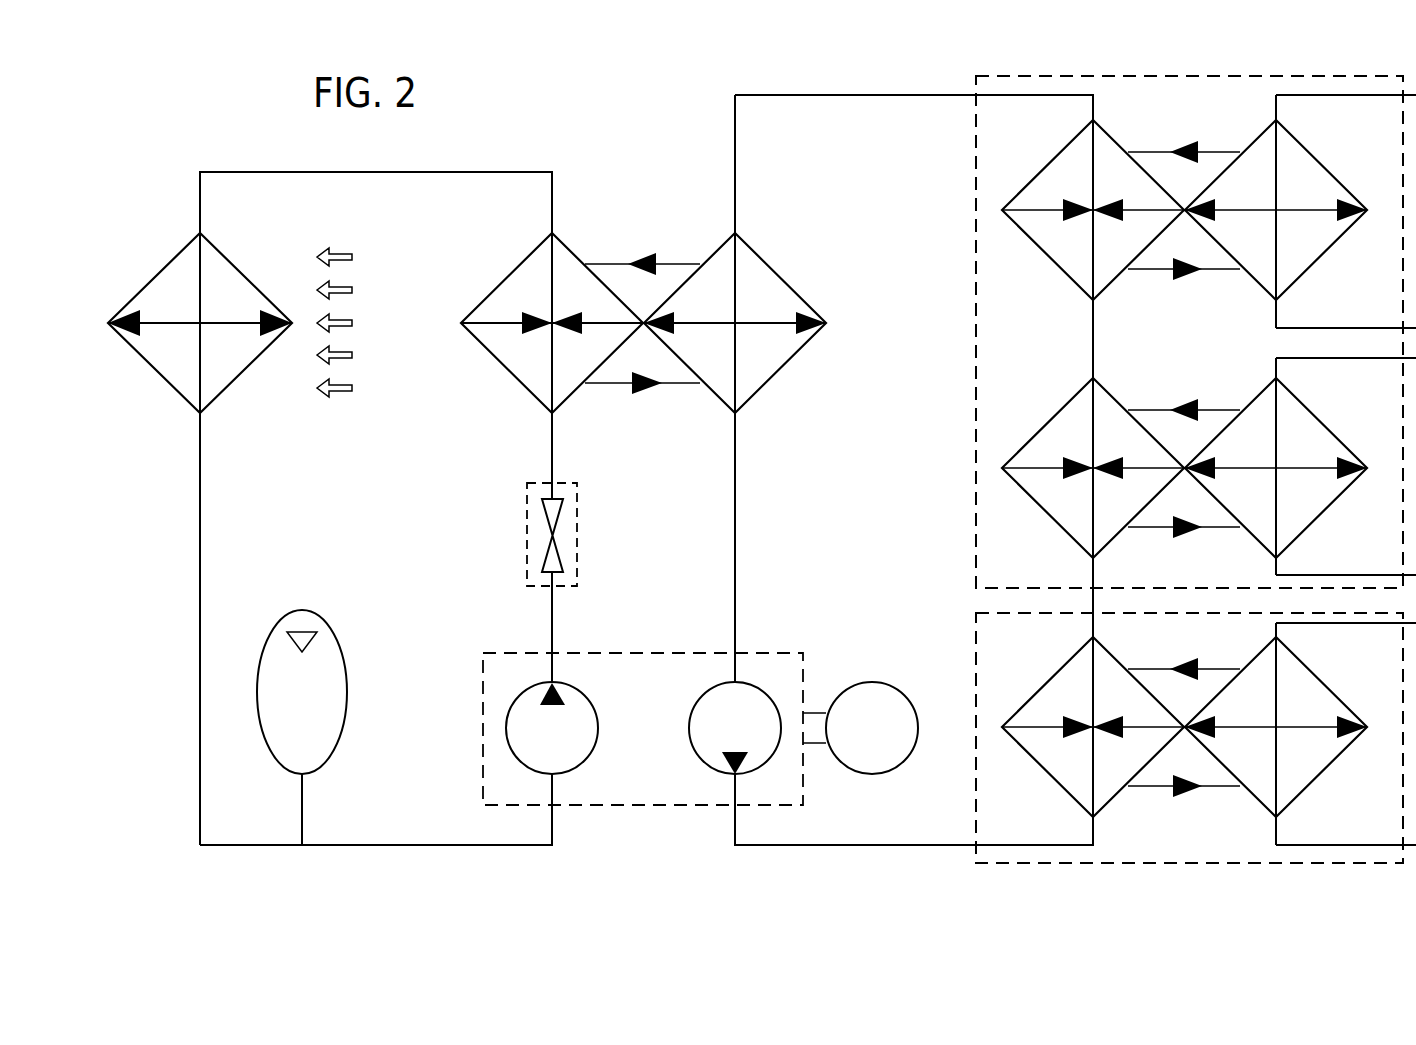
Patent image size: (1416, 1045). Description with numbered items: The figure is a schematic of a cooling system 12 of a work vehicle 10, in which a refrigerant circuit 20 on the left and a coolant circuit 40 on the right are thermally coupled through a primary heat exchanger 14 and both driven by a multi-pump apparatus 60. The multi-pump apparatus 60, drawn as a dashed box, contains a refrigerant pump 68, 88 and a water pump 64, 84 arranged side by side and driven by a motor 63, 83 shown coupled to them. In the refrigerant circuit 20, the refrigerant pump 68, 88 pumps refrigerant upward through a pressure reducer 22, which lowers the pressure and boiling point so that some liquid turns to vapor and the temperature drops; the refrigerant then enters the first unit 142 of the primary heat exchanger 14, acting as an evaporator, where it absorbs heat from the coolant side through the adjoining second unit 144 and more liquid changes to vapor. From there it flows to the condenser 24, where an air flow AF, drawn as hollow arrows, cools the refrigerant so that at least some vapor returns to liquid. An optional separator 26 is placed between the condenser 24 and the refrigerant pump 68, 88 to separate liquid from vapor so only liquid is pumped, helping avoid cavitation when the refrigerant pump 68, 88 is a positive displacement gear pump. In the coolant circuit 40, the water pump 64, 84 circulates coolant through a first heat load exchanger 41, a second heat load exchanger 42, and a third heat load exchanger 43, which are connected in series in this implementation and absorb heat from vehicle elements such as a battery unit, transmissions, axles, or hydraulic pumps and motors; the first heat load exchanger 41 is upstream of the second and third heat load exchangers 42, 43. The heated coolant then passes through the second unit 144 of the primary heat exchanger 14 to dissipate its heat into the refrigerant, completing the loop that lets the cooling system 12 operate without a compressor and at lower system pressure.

The work vehicle 10 is at (762, 472).
The cooling system 12 is at (668, 62).
The primary heat exchanger 14 is at (643, 215).
The first unit (evaporator) of the primary heat exchanger 142 is at (473, 352).
The second unit of the primary heat exchanger 144 is at (815, 353).
The refrigerant circuit 20 is at (398, 862).
The pressure reducer 22 is at (577, 535).
The condenser 24 is at (163, 272).
The separator 26 is at (317, 613).
The coolant circuit 40 is at (883, 862).
The first heat load exchanger 41 is at (1170, 818).
The second heat load exchanger 42 is at (1177, 380).
The third heat load exchanger 43 is at (1185, 113).
The multi-pump apparatus 60 is at (692, 828).
The motor 63 is at (860, 690).
The motor 83 is at (885, 682).
The water pump 64 is at (711, 683).
The water pump 84 is at (720, 710).
The refrigerant pump 68 is at (577, 771).
The refrigerant pump 88 is at (558, 743).
The air flow AF is at (347, 288).